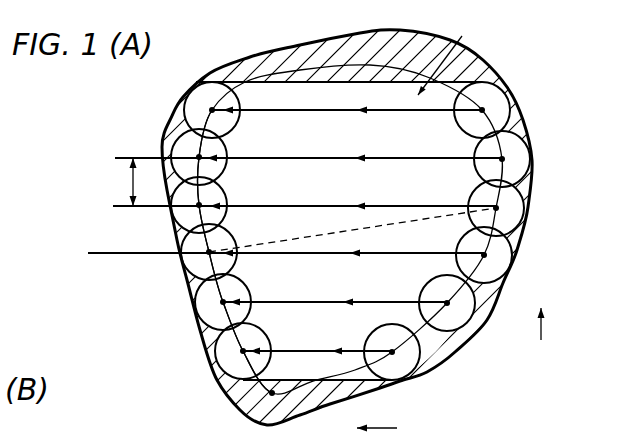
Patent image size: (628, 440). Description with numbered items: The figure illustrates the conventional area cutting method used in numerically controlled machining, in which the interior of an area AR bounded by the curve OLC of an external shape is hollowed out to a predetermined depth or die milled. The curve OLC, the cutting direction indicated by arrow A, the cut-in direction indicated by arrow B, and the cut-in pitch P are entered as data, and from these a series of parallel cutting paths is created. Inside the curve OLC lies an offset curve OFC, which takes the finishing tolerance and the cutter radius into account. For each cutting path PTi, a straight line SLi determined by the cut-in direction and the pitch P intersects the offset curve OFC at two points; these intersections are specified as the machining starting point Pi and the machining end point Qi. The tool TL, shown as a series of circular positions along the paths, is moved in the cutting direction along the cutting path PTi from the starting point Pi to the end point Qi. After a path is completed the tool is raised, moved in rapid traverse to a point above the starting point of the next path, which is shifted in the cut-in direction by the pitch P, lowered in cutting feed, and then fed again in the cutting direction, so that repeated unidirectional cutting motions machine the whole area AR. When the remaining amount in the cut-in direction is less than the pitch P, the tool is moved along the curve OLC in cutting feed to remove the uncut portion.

The curve of external shape OLC is at (163, 128).
The offset curve OFC is at (205, 335).
The tool TL is at (500, 245).
The area AR is at (449, 54).
The cut-in pitch P is at (124, 182).
The machining starting point Pi is at (492, 258).
The machining end point Qi is at (200, 260).
The straight line SLi is at (107, 253).
The cutting path PTi is at (346, 274).
The cutting direction arrow A is at (386, 429).
The cut-in direction arrow B is at (538, 338).